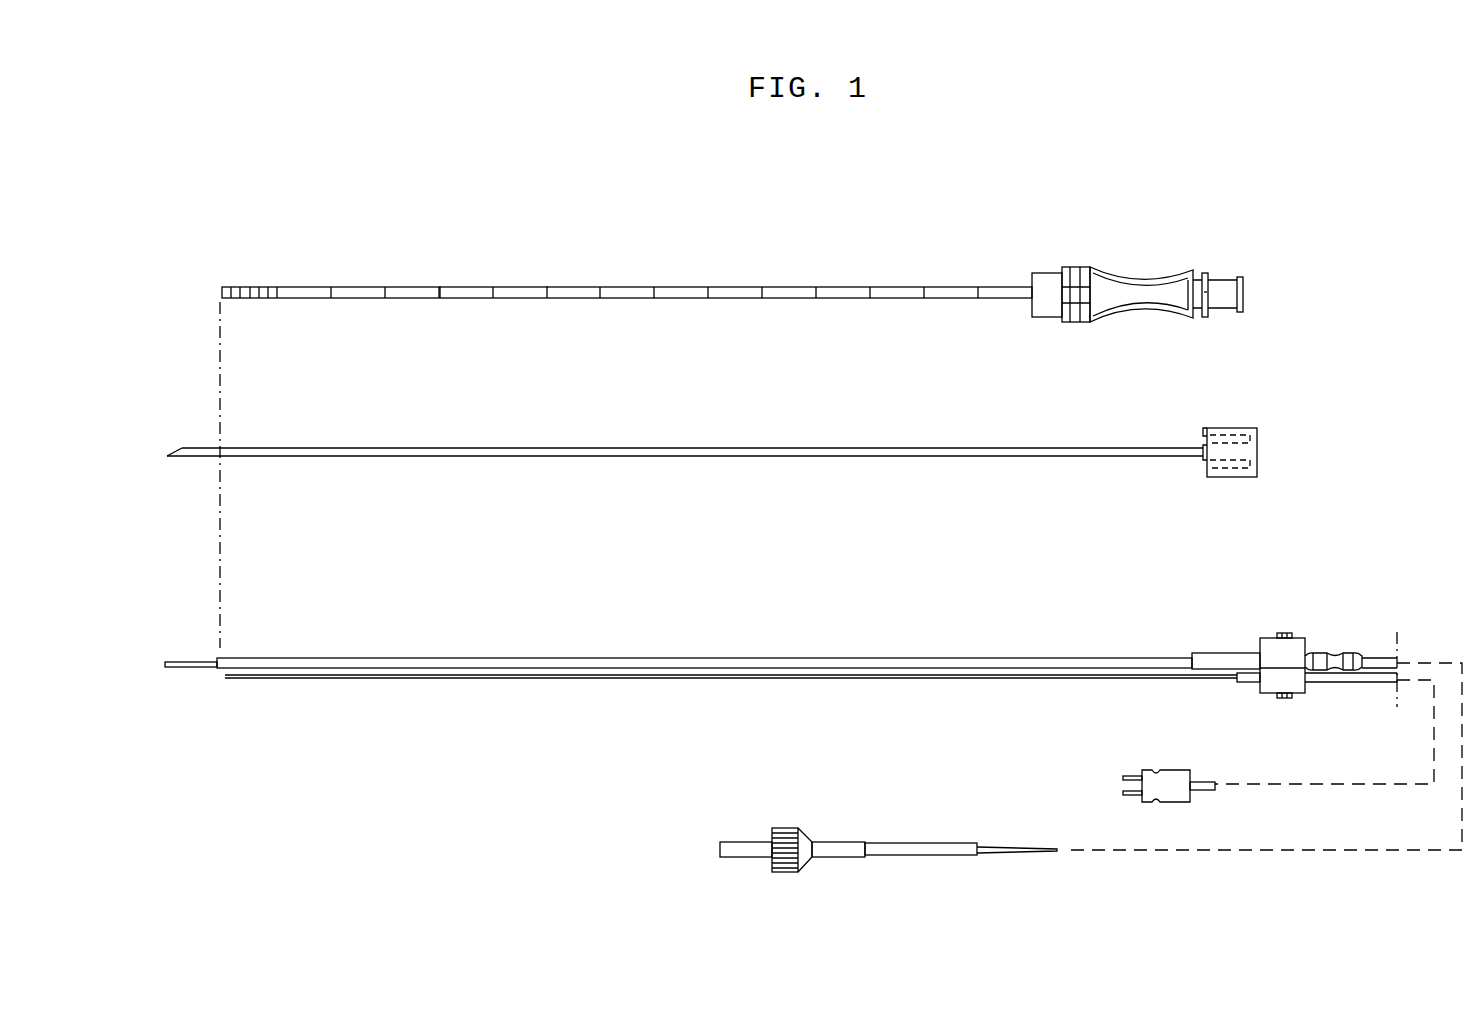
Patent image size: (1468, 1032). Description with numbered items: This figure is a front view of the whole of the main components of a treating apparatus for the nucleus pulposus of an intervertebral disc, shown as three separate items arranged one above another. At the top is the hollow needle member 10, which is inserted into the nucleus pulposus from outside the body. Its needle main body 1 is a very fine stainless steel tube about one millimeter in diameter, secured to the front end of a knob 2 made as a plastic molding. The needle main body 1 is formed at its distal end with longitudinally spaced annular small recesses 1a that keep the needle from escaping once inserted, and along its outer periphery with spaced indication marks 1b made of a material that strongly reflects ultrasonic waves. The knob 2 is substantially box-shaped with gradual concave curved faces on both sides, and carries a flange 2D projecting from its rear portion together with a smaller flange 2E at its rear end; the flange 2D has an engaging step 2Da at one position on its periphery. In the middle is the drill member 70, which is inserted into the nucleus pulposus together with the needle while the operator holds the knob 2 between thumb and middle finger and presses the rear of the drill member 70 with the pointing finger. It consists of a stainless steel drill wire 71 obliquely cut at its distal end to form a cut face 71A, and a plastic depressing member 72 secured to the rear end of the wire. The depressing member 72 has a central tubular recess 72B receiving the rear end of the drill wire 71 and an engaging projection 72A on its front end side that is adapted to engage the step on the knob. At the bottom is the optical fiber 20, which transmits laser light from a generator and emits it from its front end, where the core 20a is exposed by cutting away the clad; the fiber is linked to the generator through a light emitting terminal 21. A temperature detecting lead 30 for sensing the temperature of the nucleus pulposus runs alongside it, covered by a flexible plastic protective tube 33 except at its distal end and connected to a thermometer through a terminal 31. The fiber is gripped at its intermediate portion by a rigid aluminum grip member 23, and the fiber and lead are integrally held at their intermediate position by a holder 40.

The needle main body 1 is at (731, 294).
The annular small recesses 1a is at (252, 288).
The indication marks 1b is at (440, 291).
The knob 2 is at (1132, 268).
The flange 2D is at (1207, 275).
The engaging step 2Da is at (1208, 296).
The smaller flange 2E is at (1243, 295).
The hollow needle member 10 is at (831, 283).
The optical fiber 20 is at (862, 650).
The core 20a is at (193, 660).
The light emitting terminal 21 is at (750, 852).
The grip member 23 is at (1333, 660).
The temperature detecting lead 30 is at (803, 684).
The terminal 31 is at (1163, 784).
The protective tube 33 is at (1343, 683).
The holder 40 is at (1281, 630).
The drill member 70 is at (842, 443).
The drill wire 71 is at (661, 452).
The cut face 71A is at (171, 448).
The depressing member 72 is at (1234, 437).
The engaging projection 72A is at (1205, 428).
The tubular recess 72B is at (1203, 459).